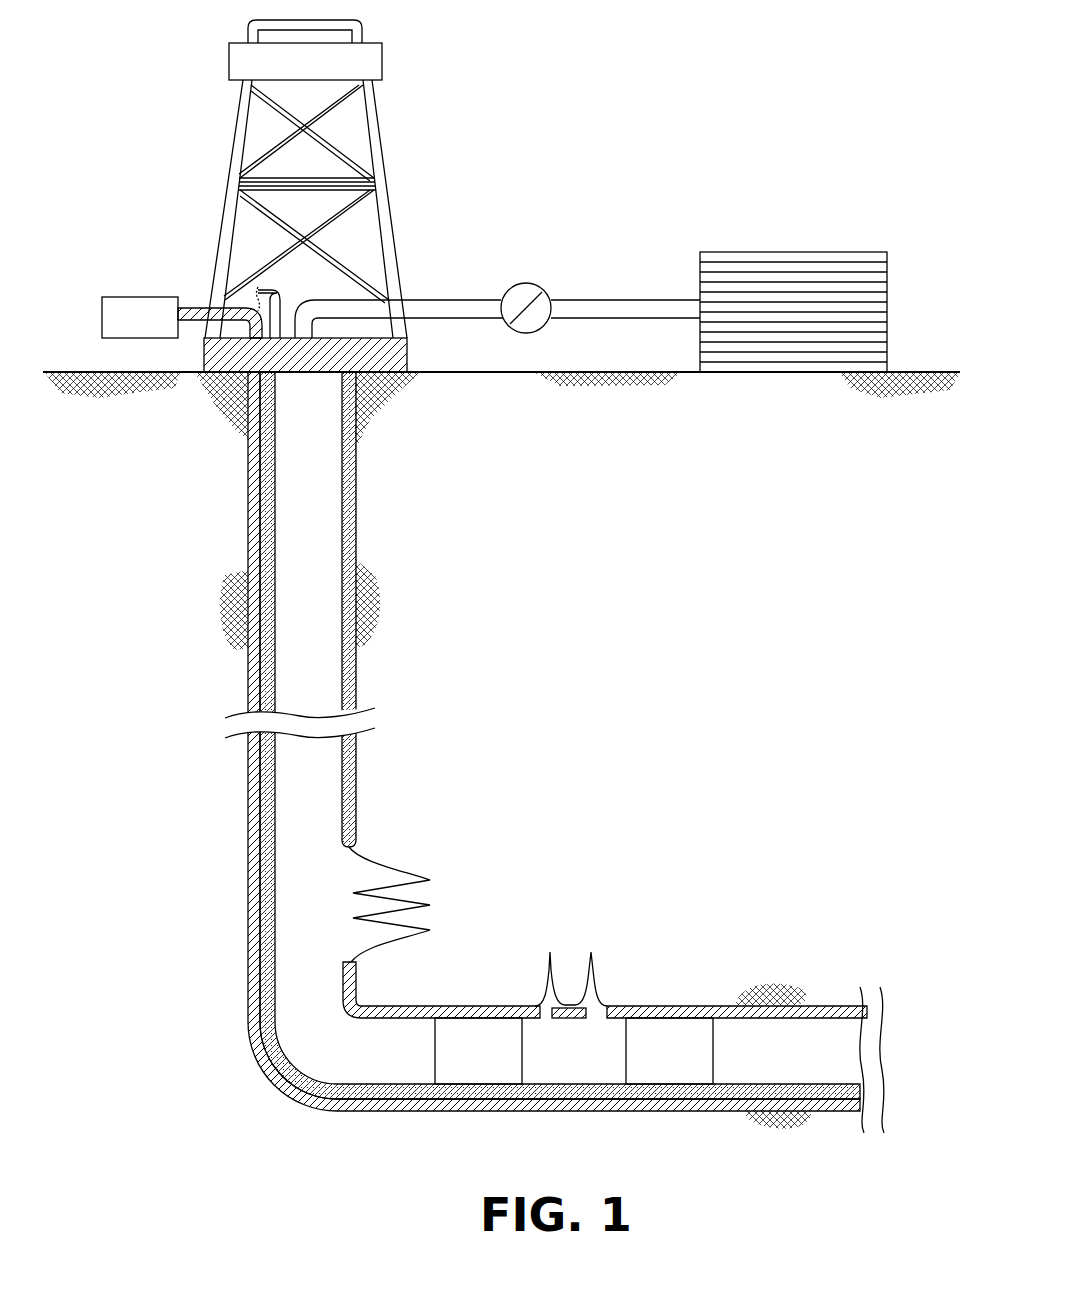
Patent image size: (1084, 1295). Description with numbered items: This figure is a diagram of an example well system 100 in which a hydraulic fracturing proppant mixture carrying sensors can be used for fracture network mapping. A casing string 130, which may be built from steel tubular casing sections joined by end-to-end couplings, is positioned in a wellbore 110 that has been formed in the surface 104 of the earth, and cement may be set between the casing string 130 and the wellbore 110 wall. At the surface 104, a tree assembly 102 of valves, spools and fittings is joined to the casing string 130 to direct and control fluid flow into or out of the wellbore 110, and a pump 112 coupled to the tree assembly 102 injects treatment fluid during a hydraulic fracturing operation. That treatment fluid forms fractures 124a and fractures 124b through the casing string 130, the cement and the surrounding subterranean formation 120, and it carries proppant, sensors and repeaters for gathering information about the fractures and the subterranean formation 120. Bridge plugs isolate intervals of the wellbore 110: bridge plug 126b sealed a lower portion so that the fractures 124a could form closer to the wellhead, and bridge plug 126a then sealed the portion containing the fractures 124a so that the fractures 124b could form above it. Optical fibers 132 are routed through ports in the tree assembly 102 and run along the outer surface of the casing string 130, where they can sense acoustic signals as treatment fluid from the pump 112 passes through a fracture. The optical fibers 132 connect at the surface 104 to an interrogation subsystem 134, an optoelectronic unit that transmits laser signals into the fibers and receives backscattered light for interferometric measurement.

The well system 100 is at (168, 135).
The tree assembly 102 is at (383, 64).
The surface 104 is at (922, 372).
The wellbore 110 is at (308, 522).
The pump 112 is at (790, 251).
The subterranean formation 120 is at (780, 988).
The fractures 124a is at (595, 993).
The fractures 124b is at (432, 904).
The bridge plug 126a is at (490, 1080).
The bridge plug 126b is at (672, 1080).
The casing string 130 is at (345, 810).
The optical fibers 132 is at (262, 925).
The interrogation subsystem 134 is at (140, 296).